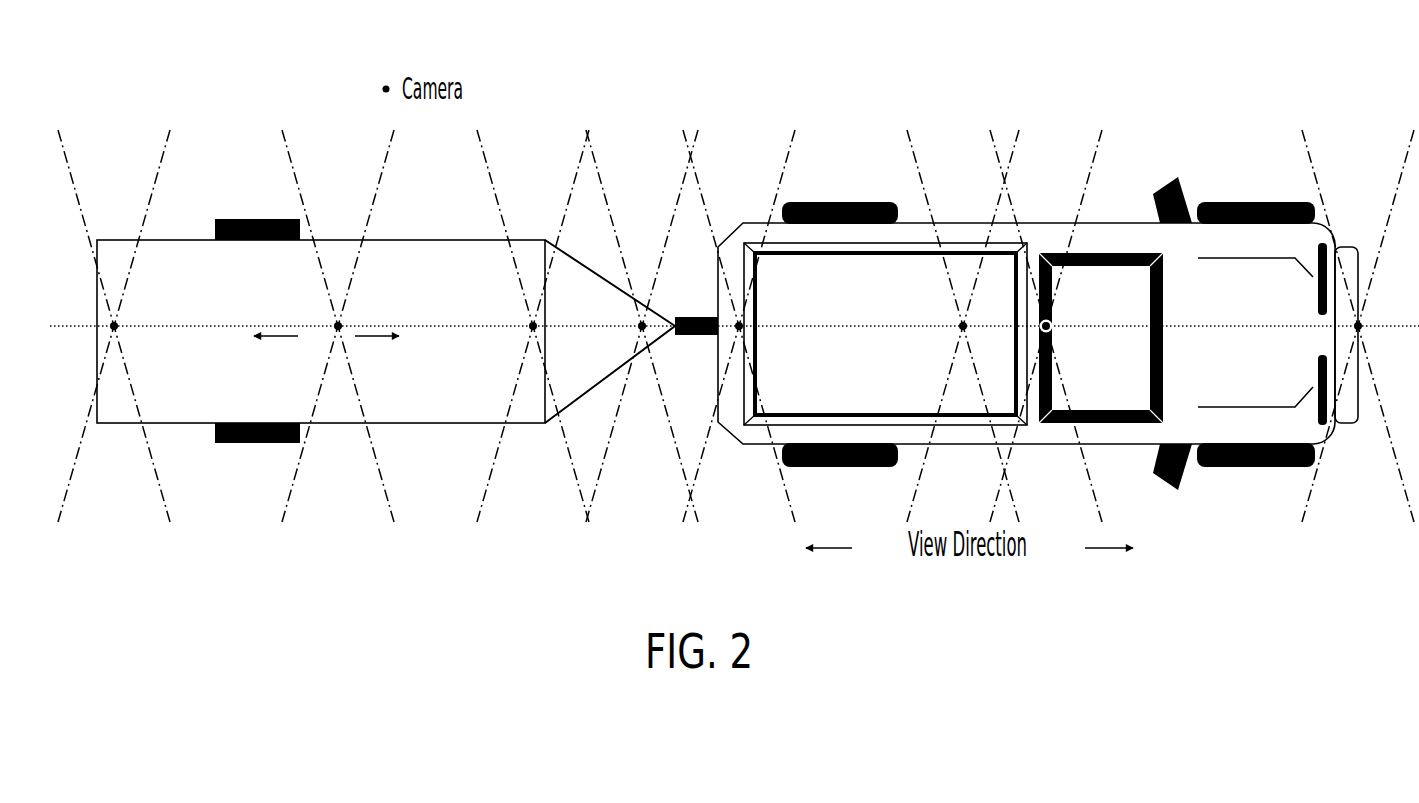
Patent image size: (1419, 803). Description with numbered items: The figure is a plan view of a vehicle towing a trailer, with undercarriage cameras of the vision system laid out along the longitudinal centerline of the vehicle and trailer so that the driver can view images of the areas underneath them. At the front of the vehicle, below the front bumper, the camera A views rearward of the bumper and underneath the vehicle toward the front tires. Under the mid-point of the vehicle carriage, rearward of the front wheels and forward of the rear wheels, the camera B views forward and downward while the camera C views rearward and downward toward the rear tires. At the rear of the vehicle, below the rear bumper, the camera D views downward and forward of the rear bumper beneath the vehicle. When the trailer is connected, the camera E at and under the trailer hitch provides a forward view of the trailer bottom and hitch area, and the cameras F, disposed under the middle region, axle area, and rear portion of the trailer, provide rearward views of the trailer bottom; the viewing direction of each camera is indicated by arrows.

The camera A is at (1358, 326).
The camera B is at (1046, 326).
The camera C is at (963, 326).
The camera D is at (739, 326).
The camera E is at (642, 326).
The cameras F is at (323, 326).